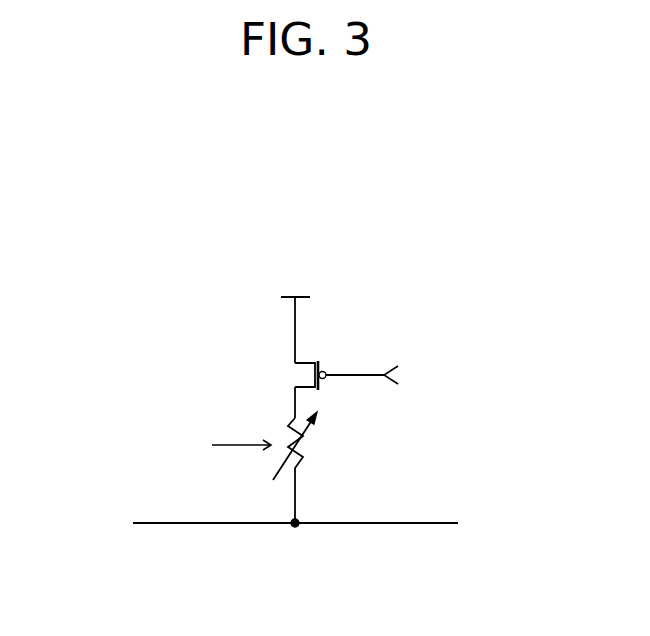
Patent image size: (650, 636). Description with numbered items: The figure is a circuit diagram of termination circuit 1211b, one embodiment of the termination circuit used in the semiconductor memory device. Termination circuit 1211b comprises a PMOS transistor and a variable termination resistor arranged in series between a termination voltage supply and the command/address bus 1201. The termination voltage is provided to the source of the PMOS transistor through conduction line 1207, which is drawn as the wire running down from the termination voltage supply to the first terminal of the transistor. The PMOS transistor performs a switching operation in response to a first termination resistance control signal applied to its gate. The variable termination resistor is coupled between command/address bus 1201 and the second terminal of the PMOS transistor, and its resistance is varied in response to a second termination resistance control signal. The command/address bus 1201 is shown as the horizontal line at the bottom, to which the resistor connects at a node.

The termination circuit 1211b is at (330, 204).
The conduction line 1207 is at (292, 330).
The command/address bus 1201 is at (212, 524).